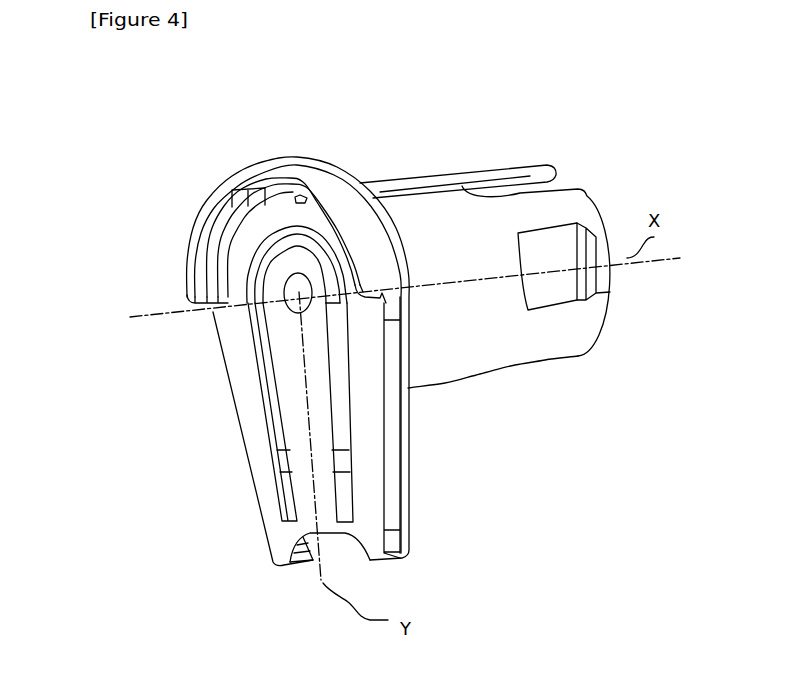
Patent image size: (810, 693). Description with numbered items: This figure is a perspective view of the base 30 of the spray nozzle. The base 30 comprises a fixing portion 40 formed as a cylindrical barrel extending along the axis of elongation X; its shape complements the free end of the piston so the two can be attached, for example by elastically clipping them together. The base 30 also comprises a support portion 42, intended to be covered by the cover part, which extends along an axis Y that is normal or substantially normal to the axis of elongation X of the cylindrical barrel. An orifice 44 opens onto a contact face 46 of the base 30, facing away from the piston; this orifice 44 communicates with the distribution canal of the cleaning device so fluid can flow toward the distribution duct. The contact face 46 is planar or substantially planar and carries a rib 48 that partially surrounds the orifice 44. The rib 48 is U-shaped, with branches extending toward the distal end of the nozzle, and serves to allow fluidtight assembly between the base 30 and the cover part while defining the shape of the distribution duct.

The base 30 is at (394, 330).
The fixing portion 40 is at (450, 250).
The support portion 42 is at (383, 415).
The orifice 44 is at (303, 297).
The contact face 46 is at (352, 366).
The rib 48 is at (288, 485).